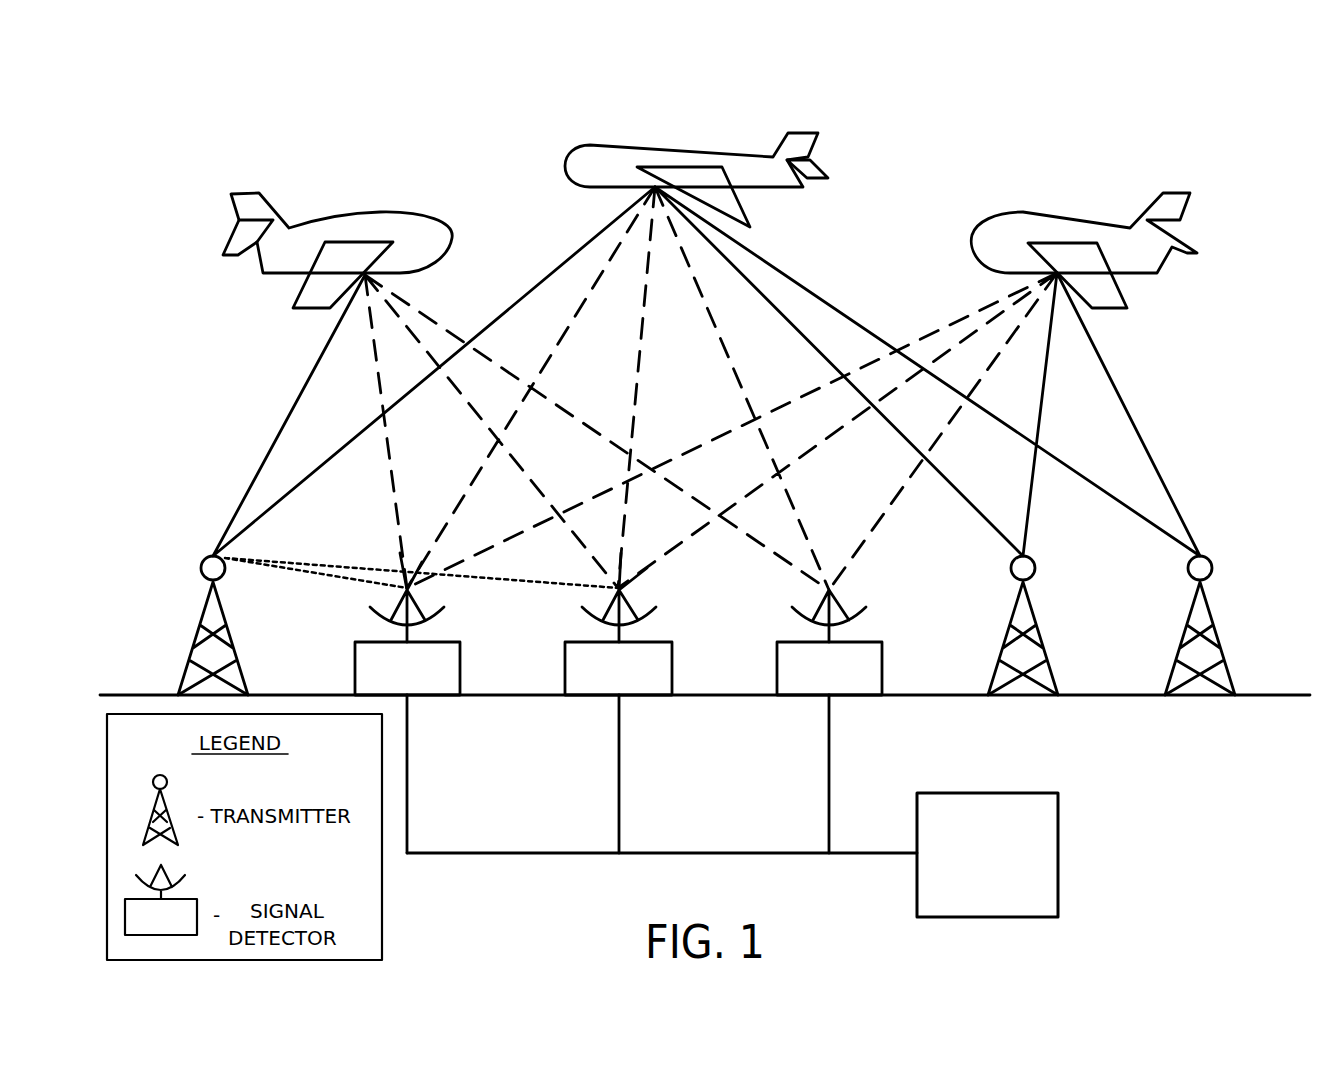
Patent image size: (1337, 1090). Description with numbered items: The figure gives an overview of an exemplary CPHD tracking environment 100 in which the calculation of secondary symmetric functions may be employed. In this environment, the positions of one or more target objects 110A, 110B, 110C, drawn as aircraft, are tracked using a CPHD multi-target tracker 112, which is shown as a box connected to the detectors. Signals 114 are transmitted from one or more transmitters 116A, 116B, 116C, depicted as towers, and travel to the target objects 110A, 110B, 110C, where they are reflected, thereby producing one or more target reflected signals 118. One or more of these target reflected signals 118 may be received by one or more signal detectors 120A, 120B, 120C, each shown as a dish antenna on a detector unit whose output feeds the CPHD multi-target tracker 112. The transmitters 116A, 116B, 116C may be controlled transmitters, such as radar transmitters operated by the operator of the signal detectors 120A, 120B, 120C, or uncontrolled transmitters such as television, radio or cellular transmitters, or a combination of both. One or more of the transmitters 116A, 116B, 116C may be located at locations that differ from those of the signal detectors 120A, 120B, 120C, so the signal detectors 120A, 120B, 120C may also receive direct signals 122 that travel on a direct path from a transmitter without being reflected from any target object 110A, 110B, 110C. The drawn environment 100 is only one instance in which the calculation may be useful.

The CPHD tracking environment 100 is at (1168, 127).
The target object 110A is at (380, 212).
The target object 110B is at (637, 145).
The target object 110C is at (1033, 212).
The CPHD multi-target tracker 112 is at (1040, 793).
The signals 114 is at (275, 433).
The transmitter 116A is at (223, 578).
The transmitter 116B is at (1035, 578).
The transmitter 116C is at (1212, 578).
The target reflected signals 118 is at (375, 357).
The signal detector 120A is at (355, 677).
The signal detector 120B is at (565, 677).
The signal detector 120C is at (777, 677).
The direct signals 122 is at (368, 581).